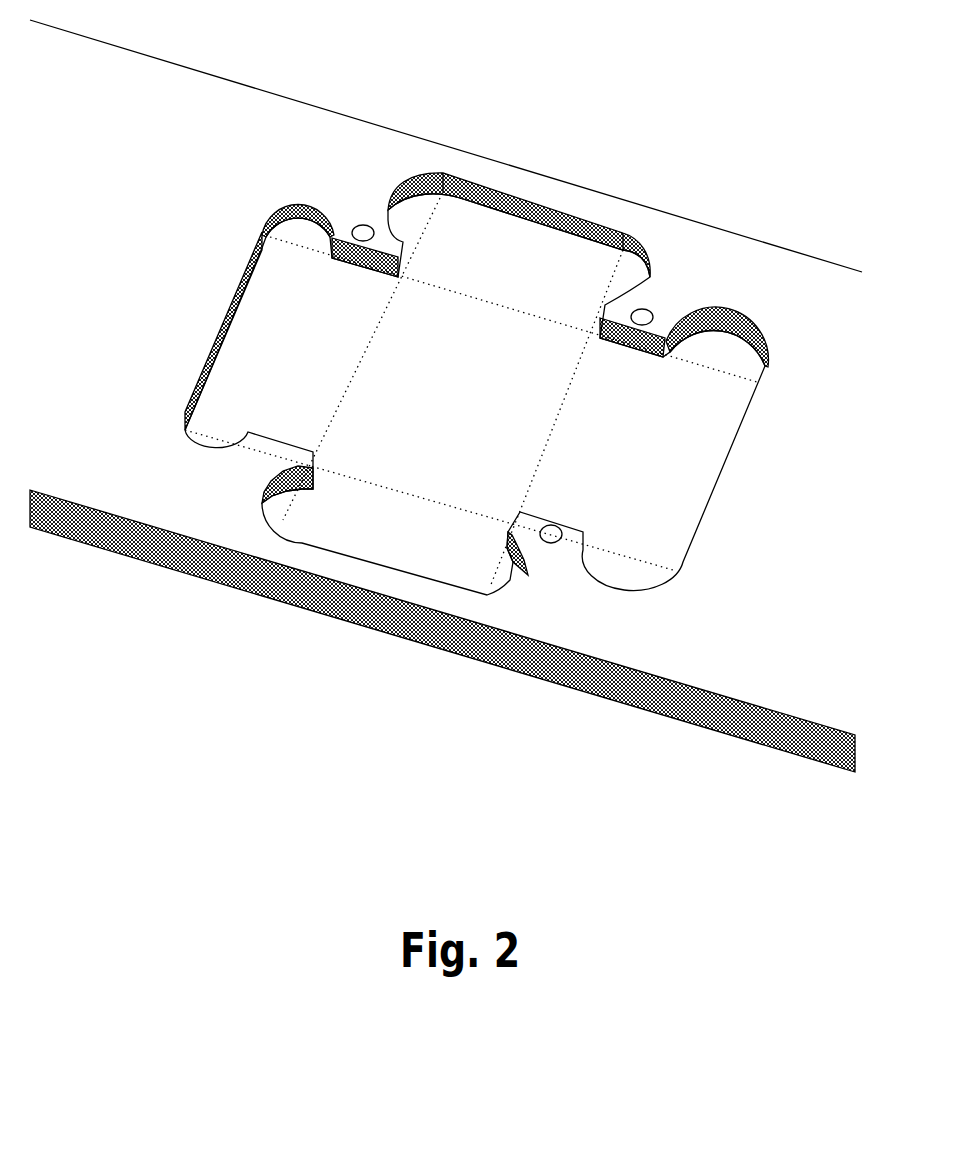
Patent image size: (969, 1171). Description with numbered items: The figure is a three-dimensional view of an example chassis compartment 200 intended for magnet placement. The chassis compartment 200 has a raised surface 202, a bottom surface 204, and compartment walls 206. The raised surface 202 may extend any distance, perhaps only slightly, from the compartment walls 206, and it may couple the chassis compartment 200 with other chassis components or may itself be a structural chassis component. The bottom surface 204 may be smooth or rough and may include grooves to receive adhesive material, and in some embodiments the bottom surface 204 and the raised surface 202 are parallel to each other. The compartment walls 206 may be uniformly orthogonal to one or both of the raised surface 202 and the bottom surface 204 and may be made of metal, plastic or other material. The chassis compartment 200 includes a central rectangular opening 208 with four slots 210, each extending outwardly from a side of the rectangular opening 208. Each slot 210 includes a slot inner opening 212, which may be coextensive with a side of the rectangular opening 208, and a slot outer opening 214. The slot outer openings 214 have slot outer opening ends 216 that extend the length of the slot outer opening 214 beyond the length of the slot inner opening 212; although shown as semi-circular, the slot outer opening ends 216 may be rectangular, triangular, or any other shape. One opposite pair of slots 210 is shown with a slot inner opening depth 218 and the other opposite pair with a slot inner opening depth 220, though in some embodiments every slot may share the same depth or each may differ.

The chassis compartment 200 is at (233, 756).
The raised surface 202 is at (446, 146).
The bottom surface 204 is at (475, 394).
The compartment walls 206 is at (503, 202).
The rectangular opening 208 is at (452, 381).
The slots 210 is at (471, 392).
The slot inner openings 212 is at (450, 411).
The slot outer openings 214 is at (439, 393).
The slot outer opening ends 216 is at (295, 238).
The slot inner opening depth 218 is at (654, 384).
The slot inner opening depth 220 is at (355, 508).